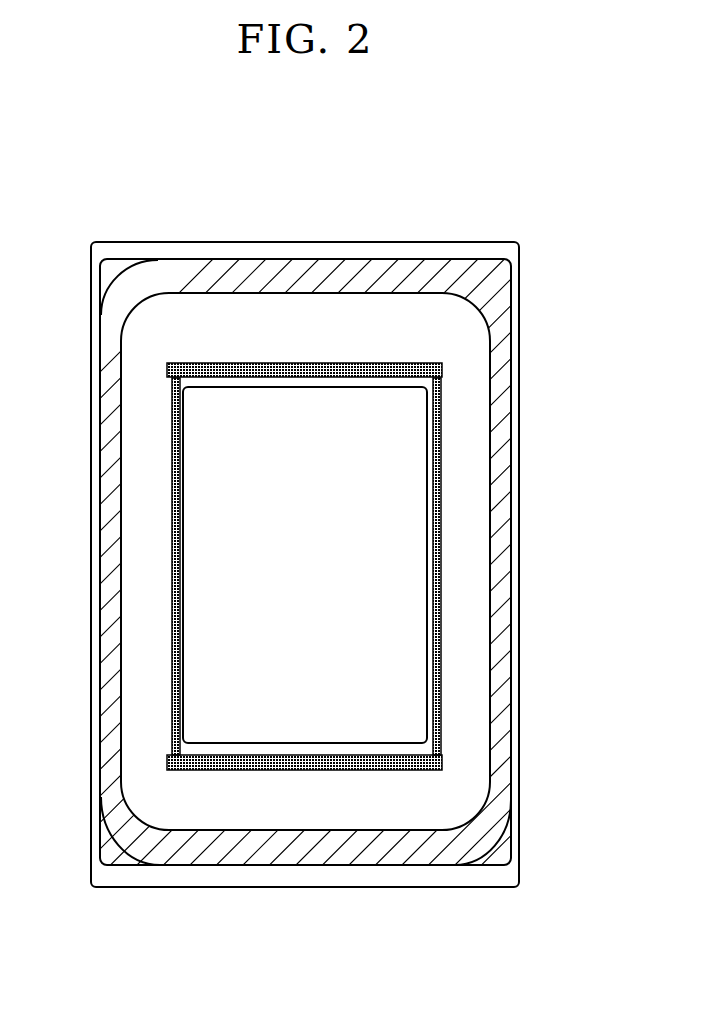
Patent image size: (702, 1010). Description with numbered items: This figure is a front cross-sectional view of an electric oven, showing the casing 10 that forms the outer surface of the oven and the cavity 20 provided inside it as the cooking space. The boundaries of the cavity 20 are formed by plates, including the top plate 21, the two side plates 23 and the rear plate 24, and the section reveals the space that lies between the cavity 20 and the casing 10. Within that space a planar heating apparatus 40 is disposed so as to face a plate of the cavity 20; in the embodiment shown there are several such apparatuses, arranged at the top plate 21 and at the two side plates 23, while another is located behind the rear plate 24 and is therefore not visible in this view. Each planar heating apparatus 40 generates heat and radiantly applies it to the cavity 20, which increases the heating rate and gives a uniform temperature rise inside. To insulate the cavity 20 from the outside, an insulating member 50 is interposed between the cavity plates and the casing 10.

The casing 10 is at (472, 242).
The cavity 20 is at (292, 568).
The top plate 21 is at (262, 383).
The side plates 23 is at (182, 482).
The rear plate 24 is at (267, 750).
The planar heating apparatus 40 is at (452, 367).
The insulating member 50 is at (500, 410).